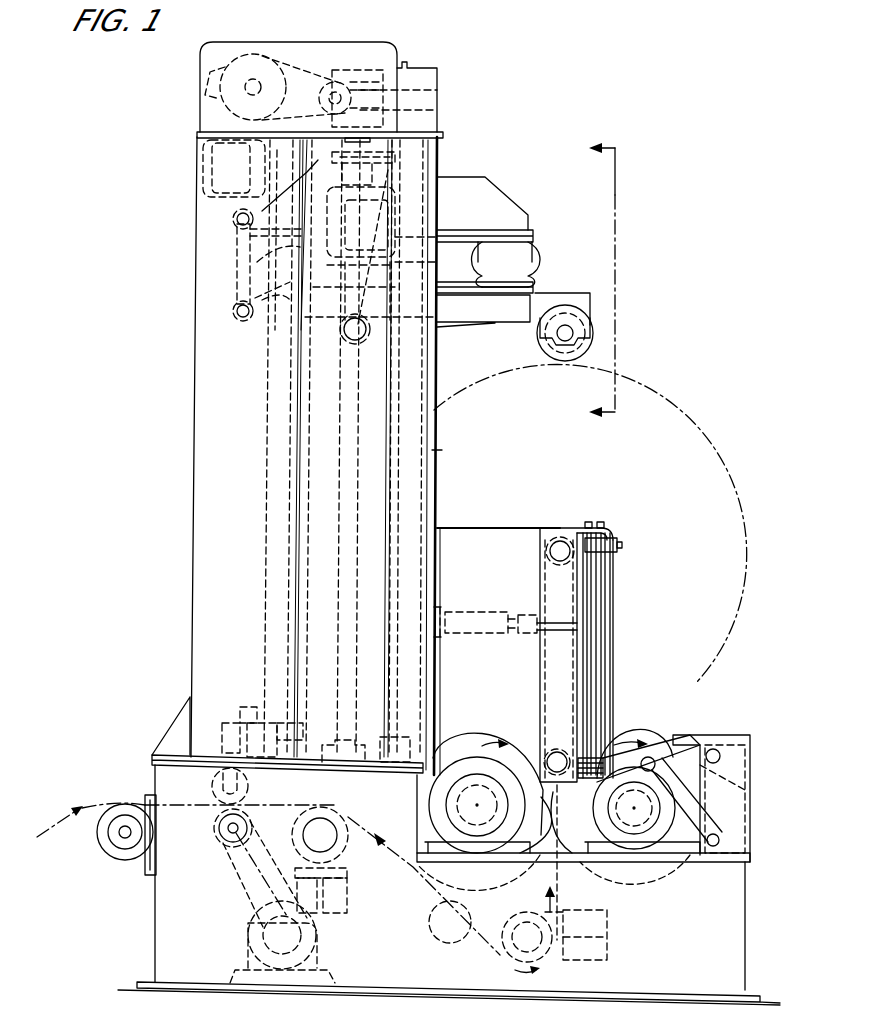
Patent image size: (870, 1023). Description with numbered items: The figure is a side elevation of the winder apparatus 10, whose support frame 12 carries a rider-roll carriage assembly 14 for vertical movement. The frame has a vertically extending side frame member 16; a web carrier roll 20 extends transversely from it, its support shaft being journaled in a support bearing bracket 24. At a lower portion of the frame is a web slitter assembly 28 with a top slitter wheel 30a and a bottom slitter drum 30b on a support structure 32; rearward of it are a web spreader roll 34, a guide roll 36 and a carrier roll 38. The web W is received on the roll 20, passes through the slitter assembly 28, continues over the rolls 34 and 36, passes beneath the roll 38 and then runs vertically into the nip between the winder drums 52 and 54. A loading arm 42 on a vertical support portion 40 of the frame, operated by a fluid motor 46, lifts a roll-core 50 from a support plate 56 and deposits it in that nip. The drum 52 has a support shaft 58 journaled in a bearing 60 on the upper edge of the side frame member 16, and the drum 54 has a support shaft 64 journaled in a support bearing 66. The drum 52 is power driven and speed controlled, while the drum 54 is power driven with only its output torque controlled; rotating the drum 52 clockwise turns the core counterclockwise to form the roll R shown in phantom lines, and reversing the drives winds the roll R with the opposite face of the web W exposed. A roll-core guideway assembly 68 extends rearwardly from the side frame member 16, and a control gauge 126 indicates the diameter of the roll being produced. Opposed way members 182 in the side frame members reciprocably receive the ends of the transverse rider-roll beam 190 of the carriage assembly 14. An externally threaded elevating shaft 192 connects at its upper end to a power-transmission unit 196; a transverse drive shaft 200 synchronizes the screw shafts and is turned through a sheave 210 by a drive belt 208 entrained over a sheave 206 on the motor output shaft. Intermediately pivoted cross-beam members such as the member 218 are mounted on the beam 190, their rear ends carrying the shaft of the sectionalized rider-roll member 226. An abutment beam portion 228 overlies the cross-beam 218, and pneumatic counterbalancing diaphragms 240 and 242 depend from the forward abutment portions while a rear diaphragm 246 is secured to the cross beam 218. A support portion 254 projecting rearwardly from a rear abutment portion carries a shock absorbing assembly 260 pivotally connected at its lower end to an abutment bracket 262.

The winder apparatus 10 is at (652, 71).
The support frame 12 is at (391, 983).
The rider-roll carriage assembly 14 is at (544, 269).
The side frame member 16 is at (314, 456).
The web carrier roll 20 is at (118, 852).
The support bearing bracket 24 is at (141, 865).
The web slitter assembly 28 is at (206, 815).
The top slitter wheel 30a is at (250, 790).
The bottom slitter drum 30b is at (212, 841).
The support structure 32 is at (238, 720).
The web spreader roll 34 is at (447, 944).
The guide roll 36 is at (355, 855).
The carrier roll 38 is at (512, 919).
The vertical support portion 40 is at (740, 807).
The loading arm 42 is at (667, 740).
The fluid motor 46 is at (687, 808).
The roll-core 50 is at (558, 736).
The winder drum 52 is at (661, 730).
The winder drum 54 is at (454, 727).
The support platform or plate 56 is at (718, 740).
The support shaft 58 is at (658, 881).
The bearing 60 is at (588, 797).
The support shaft 64 is at (477, 796).
The support bearing 66 is at (520, 812).
The roll-core guideway assembly 68 is at (487, 522).
The control gauge 126 is at (623, 628).
The guide rail 182 is at (447, 450).
The rider-roll beam 190 is at (440, 160).
The externally threaded elevating shaft 192 is at (438, 374).
The power-transmission unit 196 is at (398, 85).
The drive shaft 200 is at (354, 83).
The sheave 206 is at (258, 62).
The drive belt 208 is at (298, 100).
The sheave 210 is at (405, 107).
The cross-beam member 218 is at (474, 310).
The rider-roll member 226 is at (600, 353).
The abutment beam portion 228 is at (503, 201).
The counterbalancing diaphragm 240 is at (538, 262).
The counterbalancing diaphragm 242 is at (490, 255).
The counterbalancing diaphragm 246 is at (275, 350).
The support portion 254 is at (205, 201).
The shock absorbing assembly 260 is at (238, 253).
The abutment bracket 262 is at (250, 328).
The web W is at (64, 832).
The roll R is at (760, 497).